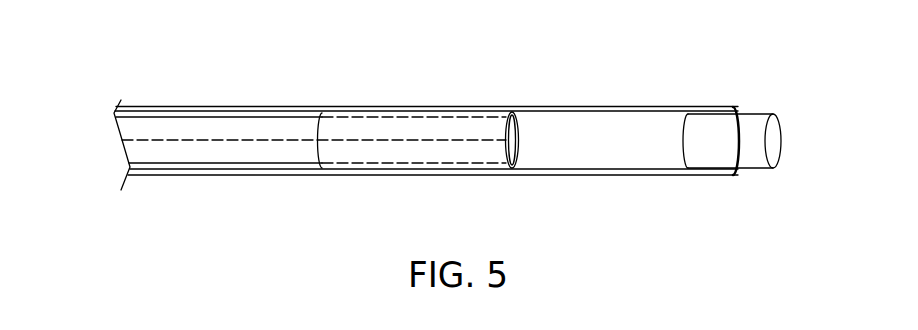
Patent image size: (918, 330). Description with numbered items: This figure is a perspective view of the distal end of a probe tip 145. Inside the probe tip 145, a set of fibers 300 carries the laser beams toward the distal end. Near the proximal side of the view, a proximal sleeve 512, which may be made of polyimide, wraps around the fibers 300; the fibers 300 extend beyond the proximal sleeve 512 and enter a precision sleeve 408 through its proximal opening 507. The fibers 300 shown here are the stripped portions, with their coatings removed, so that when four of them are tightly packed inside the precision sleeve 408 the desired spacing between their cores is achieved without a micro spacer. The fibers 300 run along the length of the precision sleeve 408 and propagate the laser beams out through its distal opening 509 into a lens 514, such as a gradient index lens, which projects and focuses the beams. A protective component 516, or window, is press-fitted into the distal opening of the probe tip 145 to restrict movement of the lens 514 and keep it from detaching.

The probe tip 145 is at (150, 106).
The proximal sleeve 512 is at (245, 111).
The proximal opening 507 is at (311, 123).
The precision sleeve 408 is at (422, 128).
The distal opening 509 is at (526, 125).
The lens 514 is at (621, 130).
The protective component 516 is at (757, 118).
The fibers 300 is at (278, 158).